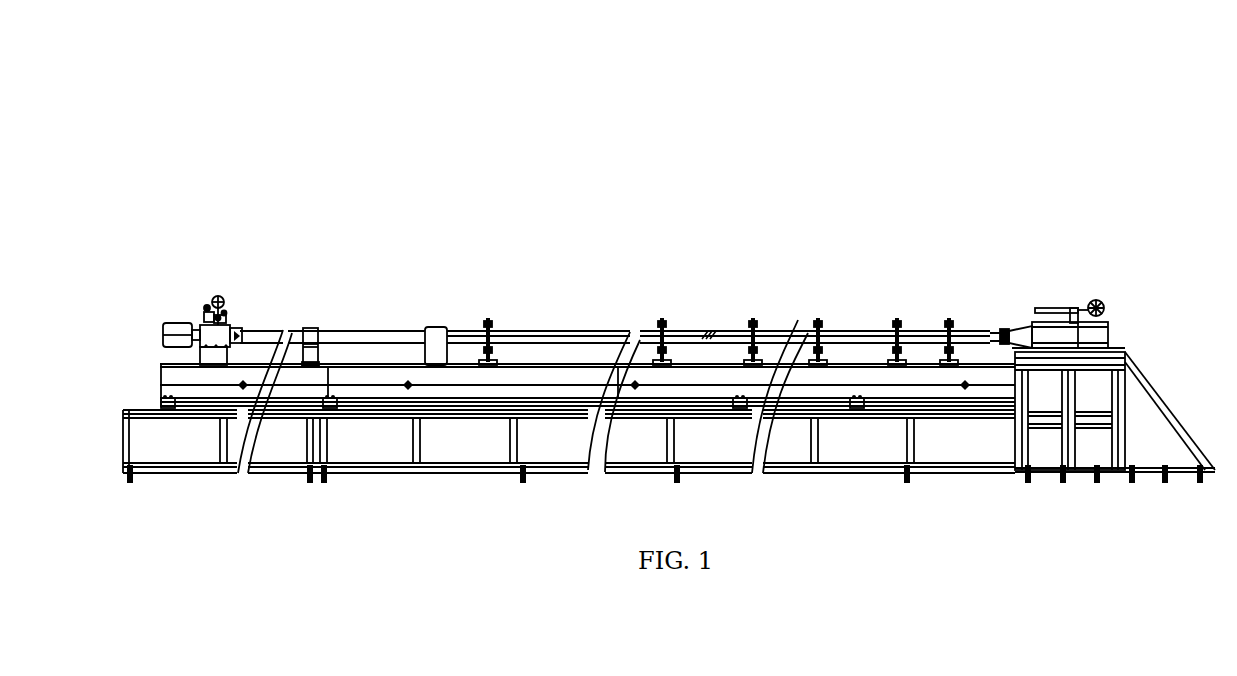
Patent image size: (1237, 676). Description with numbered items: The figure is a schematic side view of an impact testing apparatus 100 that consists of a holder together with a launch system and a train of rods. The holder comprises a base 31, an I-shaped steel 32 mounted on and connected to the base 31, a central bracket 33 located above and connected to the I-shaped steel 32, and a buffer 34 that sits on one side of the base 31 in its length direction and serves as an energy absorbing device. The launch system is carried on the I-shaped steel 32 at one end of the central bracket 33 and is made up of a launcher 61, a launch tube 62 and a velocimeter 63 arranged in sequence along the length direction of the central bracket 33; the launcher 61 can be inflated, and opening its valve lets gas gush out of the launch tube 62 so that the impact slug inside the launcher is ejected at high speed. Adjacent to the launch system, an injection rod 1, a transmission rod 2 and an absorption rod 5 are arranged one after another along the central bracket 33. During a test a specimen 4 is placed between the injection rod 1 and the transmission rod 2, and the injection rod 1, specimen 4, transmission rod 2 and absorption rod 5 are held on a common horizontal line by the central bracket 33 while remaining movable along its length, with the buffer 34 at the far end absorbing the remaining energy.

The impact testing apparatus 100 is at (290, 118).
The injection rod 1 is at (593, 332).
The transmission rod 2 is at (790, 333).
The specimen 4 is at (707, 332).
The absorption rod 5 is at (870, 333).
The base 31 is at (137, 435).
The I-shaped steel 32 is at (182, 380).
The central bracket 33 is at (490, 318).
The buffer 34 is at (1022, 348).
The launcher 61 is at (222, 323).
The launch tube 62 is at (318, 332).
The velocimeter 63 is at (438, 333).